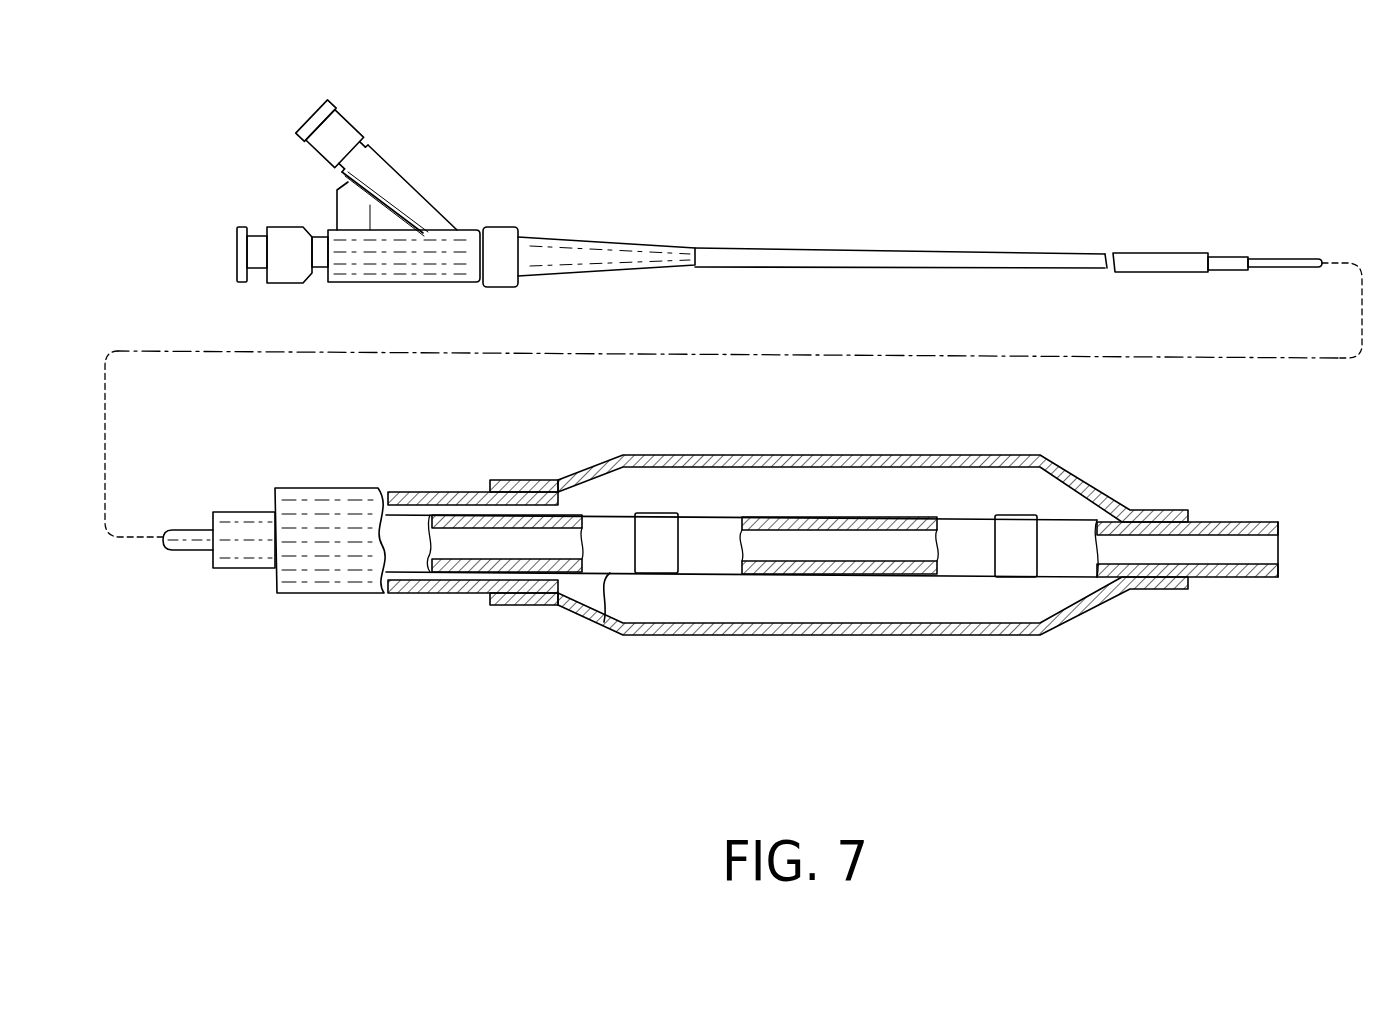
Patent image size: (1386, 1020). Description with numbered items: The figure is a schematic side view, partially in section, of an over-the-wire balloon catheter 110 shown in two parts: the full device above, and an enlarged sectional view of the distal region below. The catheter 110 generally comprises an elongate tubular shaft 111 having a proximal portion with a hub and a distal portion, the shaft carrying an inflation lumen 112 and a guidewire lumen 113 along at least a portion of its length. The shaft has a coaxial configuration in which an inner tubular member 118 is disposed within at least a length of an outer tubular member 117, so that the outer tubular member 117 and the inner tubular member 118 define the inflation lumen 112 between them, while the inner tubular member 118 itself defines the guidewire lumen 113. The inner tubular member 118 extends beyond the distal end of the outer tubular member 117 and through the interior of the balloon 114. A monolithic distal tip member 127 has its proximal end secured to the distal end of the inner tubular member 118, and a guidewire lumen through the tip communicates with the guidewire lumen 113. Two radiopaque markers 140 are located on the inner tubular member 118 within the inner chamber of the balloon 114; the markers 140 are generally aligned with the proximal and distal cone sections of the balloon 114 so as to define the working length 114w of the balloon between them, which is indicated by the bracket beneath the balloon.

The balloon catheter 110 is at (611, 125).
The elongate tubular shaft 111 is at (875, 252).
The inflation lumen 112 is at (395, 573).
The guidewire lumen 113 is at (460, 537).
The balloon 114 is at (703, 455).
The working length 114w is at (1037, 685).
The outer tubular member 117 is at (410, 490).
The inner tubular member 118 is at (602, 623).
The distal tip member 127 is at (1220, 578).
The radiopaque markers 140 is at (657, 573).